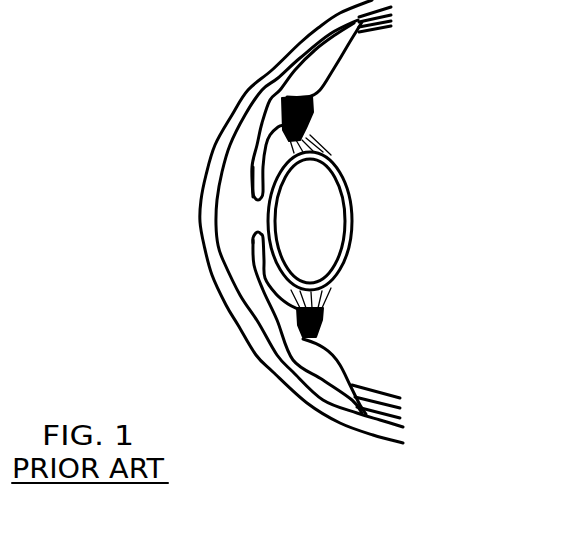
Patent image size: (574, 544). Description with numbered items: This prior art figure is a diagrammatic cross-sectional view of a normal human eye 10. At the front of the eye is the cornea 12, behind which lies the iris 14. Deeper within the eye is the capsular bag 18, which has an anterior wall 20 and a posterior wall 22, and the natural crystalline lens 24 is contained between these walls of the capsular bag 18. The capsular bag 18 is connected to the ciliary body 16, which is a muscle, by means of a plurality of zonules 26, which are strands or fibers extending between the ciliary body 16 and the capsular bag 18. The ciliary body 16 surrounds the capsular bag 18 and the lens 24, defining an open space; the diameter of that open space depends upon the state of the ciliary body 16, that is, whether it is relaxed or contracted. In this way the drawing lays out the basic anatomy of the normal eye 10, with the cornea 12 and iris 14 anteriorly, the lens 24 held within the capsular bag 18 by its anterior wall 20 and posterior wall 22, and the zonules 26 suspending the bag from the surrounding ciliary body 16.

The human eye 10 is at (232, 221).
The cornea 12 is at (200, 245).
The iris 14 is at (252, 185).
The ciliary body 16 is at (320, 63).
The capsular bag 18 is at (347, 248).
The anterior wall 20 is at (266, 216).
The posterior wall 22 is at (350, 192).
The natural crystalline lens 24 is at (315, 218).
The zonules 26 is at (312, 121).